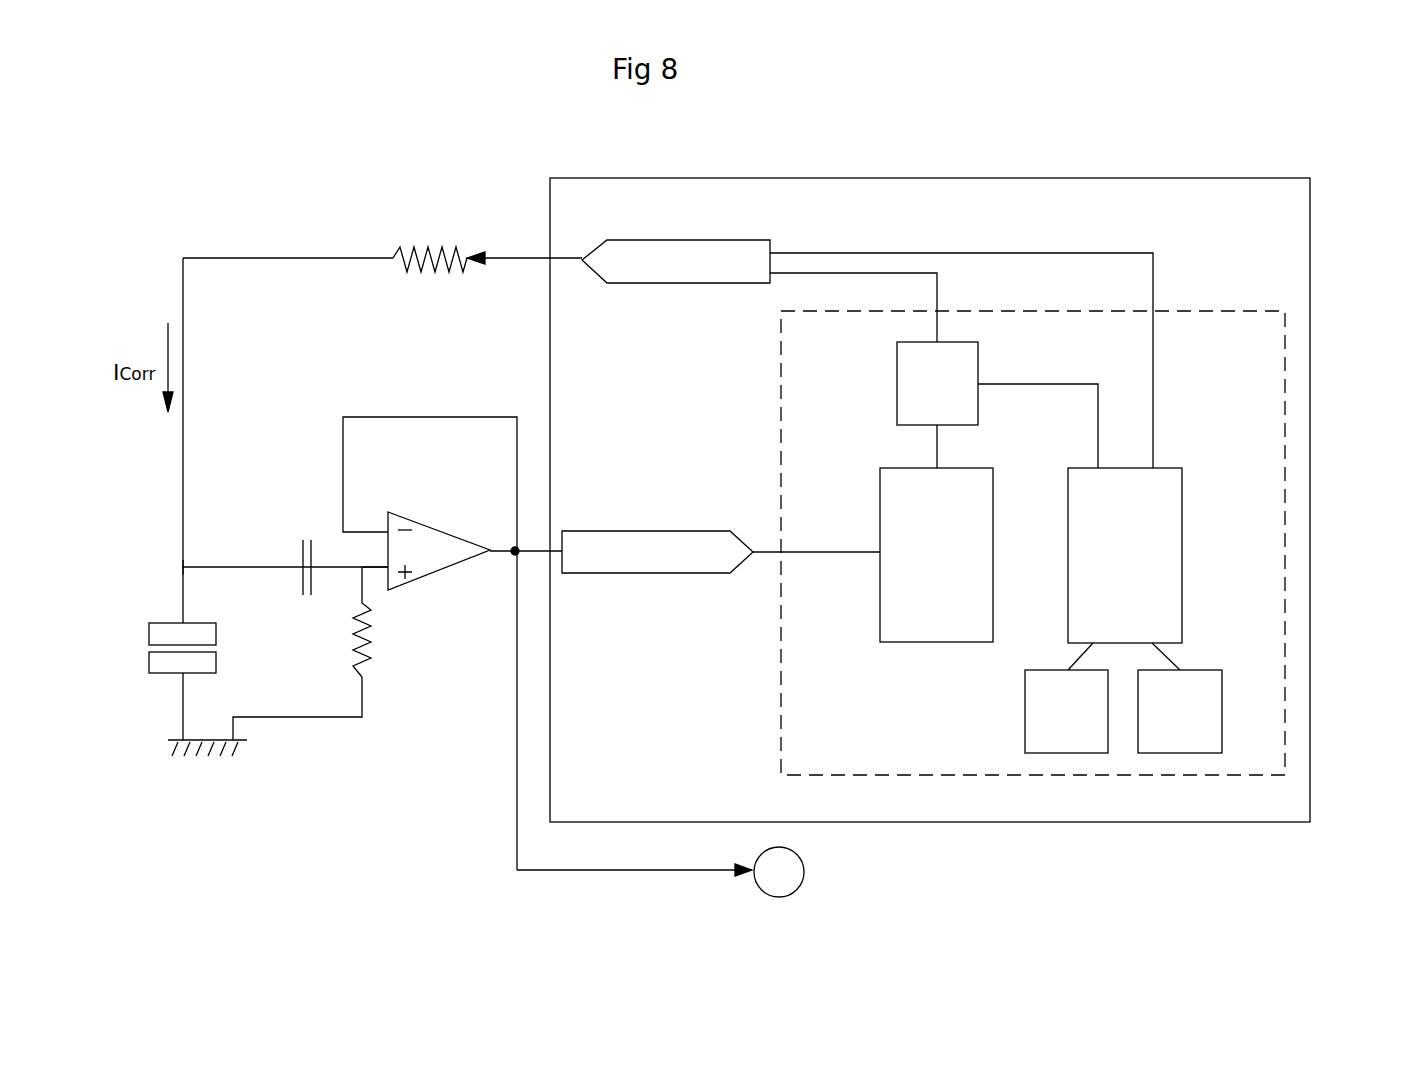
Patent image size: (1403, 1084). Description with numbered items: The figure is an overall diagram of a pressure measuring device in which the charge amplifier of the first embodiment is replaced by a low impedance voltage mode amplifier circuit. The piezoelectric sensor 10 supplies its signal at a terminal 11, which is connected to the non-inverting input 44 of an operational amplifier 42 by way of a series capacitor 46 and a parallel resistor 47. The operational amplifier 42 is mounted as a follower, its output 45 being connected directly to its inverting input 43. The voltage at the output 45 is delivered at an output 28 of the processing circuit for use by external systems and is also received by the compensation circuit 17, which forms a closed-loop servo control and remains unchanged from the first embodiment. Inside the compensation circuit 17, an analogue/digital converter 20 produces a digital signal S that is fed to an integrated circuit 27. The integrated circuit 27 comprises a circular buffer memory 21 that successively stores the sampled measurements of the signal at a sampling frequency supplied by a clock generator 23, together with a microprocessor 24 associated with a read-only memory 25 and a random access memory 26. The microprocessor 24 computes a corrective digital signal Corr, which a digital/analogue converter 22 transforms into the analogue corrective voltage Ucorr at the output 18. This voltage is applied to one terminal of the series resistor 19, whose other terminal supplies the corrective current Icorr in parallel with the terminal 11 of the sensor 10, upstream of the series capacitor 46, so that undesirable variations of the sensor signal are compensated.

The piezoelectric sensor 10 is at (150, 690).
The terminal 11 is at (183, 580).
The compensation circuit 17 is at (933, 178).
The output 18 is at (515, 258).
The series resistor 19 is at (430, 258).
The analogue/digital converter 20 is at (660, 531).
The circular buffer memory 21 is at (897, 490).
The digital/analogue converter 22 is at (677, 238).
The clock generator 23 is at (907, 383).
The microprocessor 24 is at (1150, 500).
The read-only memory 25 is at (1072, 735).
The random access memory 26 is at (1185, 735).
The integrated circuit 27 is at (1283, 650).
The output 28 is at (793, 878).
The operational amplifier 42 is at (435, 555).
The inverting input 43 is at (388, 528).
The non-inverting input 44 is at (385, 575).
The output 45 is at (508, 553).
The series capacitor 46 is at (299, 530).
The parallel resistor 47 is at (356, 662).